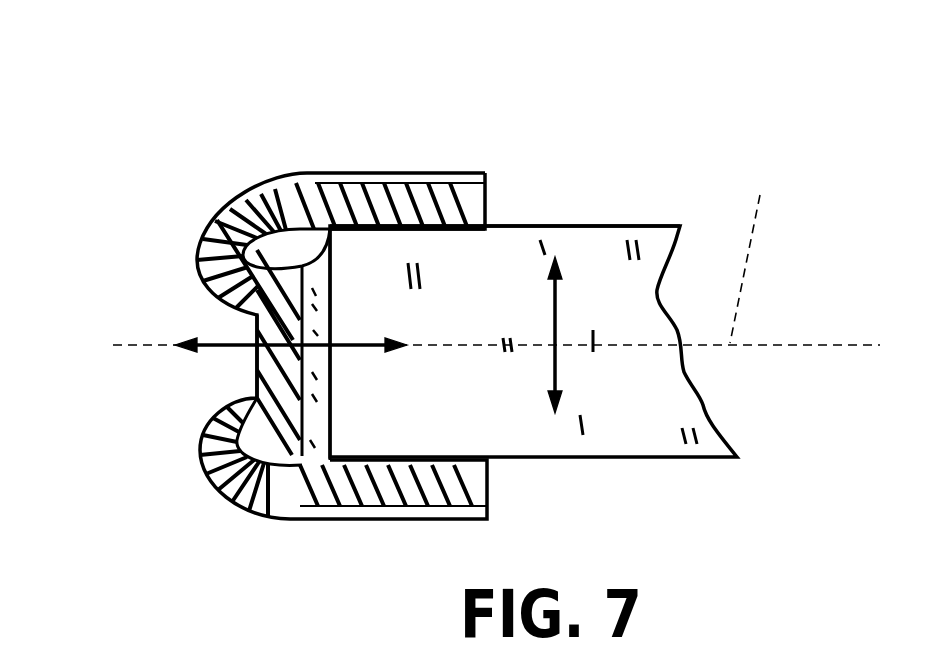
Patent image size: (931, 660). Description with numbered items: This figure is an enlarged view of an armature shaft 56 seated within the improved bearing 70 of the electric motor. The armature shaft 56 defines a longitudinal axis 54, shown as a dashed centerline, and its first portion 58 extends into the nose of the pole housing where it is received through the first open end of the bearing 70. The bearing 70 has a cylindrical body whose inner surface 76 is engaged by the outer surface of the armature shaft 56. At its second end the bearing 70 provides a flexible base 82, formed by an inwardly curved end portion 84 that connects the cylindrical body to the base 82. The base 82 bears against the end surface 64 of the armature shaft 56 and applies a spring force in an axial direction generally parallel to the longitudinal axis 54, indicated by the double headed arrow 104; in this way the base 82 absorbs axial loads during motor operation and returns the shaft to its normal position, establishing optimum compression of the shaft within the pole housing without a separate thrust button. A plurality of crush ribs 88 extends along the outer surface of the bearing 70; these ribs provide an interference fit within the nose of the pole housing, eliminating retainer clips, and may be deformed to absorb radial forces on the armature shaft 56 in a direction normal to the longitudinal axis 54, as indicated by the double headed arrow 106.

The longitudinal axis 54 is at (496, 248).
The armature shaft 56 is at (643, 223).
The first portion of armature shaft 58 is at (510, 270).
The end surface of armature shaft 64 is at (307, 373).
The bearing 70 is at (288, 344).
The inner surface 76 is at (442, 232).
The flexible base 82 is at (290, 315).
The inwardly curved end portion 84 is at (200, 240).
The crush ribs 88 is at (392, 168).
The double headed arrows 104 is at (353, 348).
The double headed arrow 106 is at (557, 317).